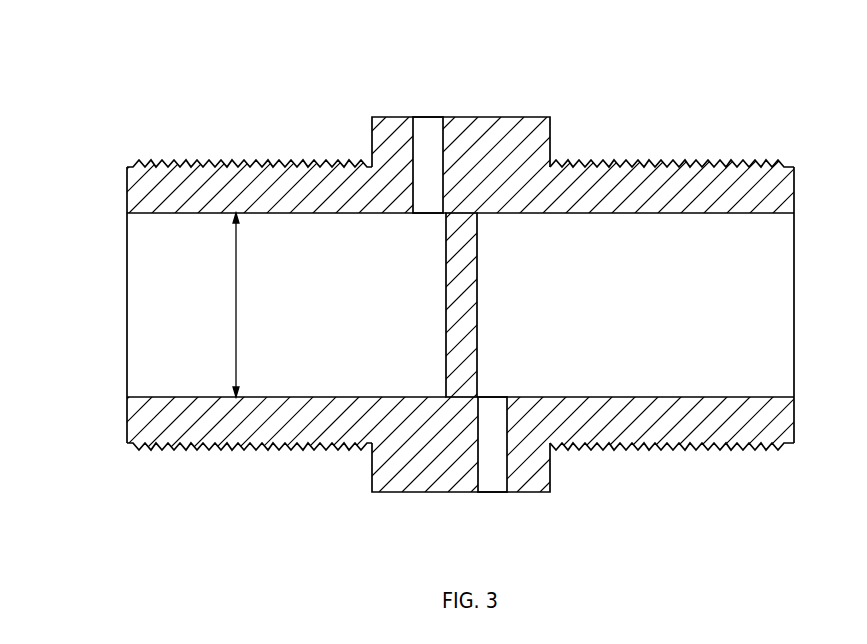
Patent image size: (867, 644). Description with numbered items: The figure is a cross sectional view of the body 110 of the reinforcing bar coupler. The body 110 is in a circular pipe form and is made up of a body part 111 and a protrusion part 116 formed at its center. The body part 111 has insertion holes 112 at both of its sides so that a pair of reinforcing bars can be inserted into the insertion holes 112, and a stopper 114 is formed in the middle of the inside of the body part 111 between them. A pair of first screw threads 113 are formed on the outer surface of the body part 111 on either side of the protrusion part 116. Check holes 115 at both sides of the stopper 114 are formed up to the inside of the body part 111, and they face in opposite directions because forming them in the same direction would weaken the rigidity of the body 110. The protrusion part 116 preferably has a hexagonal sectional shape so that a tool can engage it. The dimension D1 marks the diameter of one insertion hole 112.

The body 110 is at (433, 255).
The body part 111 is at (247, 264).
The insertion hole 112 is at (155, 298).
The first screw thread 113 is at (247, 167).
The stopper 114 is at (475, 280).
The check hole 115 is at (427, 125).
The protrusion part 116 is at (471, 272).
The inner diameter D1 is at (250, 305).